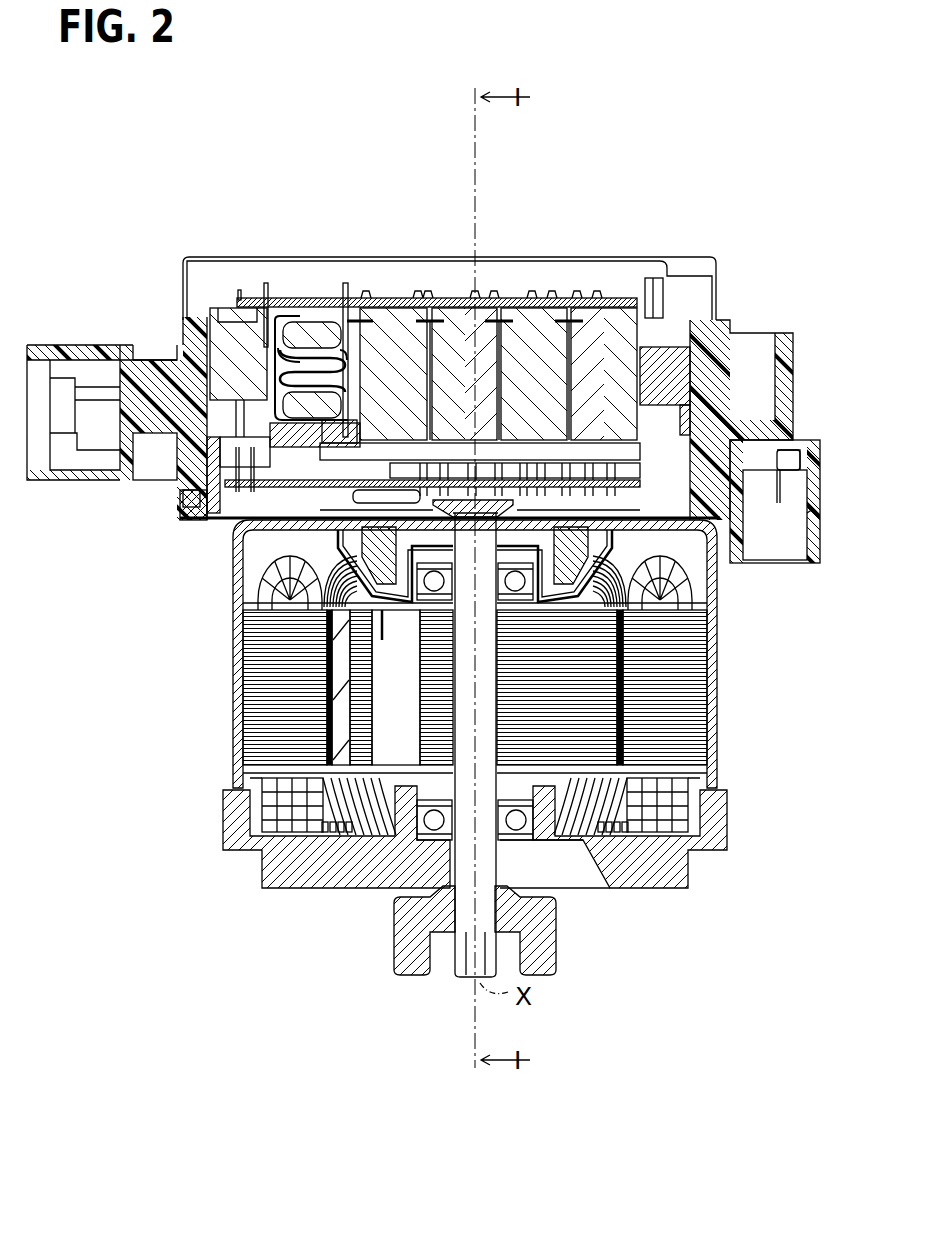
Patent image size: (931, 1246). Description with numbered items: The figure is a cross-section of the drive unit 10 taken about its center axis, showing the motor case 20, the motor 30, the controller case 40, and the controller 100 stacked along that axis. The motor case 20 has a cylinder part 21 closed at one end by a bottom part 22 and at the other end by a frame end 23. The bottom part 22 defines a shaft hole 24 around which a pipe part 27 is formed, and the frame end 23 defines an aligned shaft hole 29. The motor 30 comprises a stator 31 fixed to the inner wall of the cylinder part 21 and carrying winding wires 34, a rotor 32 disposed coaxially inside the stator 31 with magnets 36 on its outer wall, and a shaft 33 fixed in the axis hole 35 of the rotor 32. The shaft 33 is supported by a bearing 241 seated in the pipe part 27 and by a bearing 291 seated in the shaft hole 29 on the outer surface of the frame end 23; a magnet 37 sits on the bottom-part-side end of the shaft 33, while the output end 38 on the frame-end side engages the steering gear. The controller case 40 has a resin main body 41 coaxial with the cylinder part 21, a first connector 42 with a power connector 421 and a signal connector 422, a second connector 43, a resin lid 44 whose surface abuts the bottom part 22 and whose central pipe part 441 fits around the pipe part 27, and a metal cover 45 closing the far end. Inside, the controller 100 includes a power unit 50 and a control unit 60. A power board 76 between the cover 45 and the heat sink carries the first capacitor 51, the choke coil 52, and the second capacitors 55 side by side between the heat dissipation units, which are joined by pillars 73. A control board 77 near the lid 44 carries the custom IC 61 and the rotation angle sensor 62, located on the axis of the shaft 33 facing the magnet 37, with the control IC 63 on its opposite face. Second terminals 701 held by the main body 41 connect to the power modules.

The drive unit 10 is at (759, 225).
The motor case 20 is at (720, 717).
The cylinder part 21 is at (712, 737).
The bottom part 22 is at (350, 462).
The frame end 23 is at (621, 890).
The shaft hole 24 is at (506, 541).
The bearing 241 is at (685, 588).
The pipe part 27 is at (540, 590).
The shaft hole 29 is at (497, 835).
The bearing 291 is at (550, 830).
The motor 30 is at (224, 644).
The stator 31 is at (245, 661).
The rotor 32 is at (350, 686).
The shaft 33 is at (455, 862).
The winding wires 34 is at (683, 599).
The axis hole 35 is at (420, 745).
The magnets 36 is at (338, 711).
The magnet 37 is at (540, 510).
The output end 38 is at (393, 956).
The controller case 40 is at (718, 326).
The main body 41 is at (177, 460).
The first connector 42 is at (106, 345).
The power connector 421 is at (62, 345).
The signal connector 422 is at (82, 345).
The second connector 43 is at (770, 563).
The lid 44 is at (180, 512).
The pipe part 441 is at (393, 570).
The cover 45 is at (190, 257).
The power unit 50 is at (403, 272).
The first capacitor 51 is at (233, 325).
The choke coil 52 is at (308, 330).
The second capacitors 55 is at (604, 320).
The control unit 60 is at (331, 510).
The custom IC 61 is at (395, 500).
The rotation angle sensor 62 is at (483, 505).
The control IC 63 is at (200, 494).
The pillar 73 is at (665, 295).
The power board 76 is at (266, 295).
The control board 77 is at (277, 512).
The controller 100 is at (710, 288).
The second terminal 701 is at (533, 292).